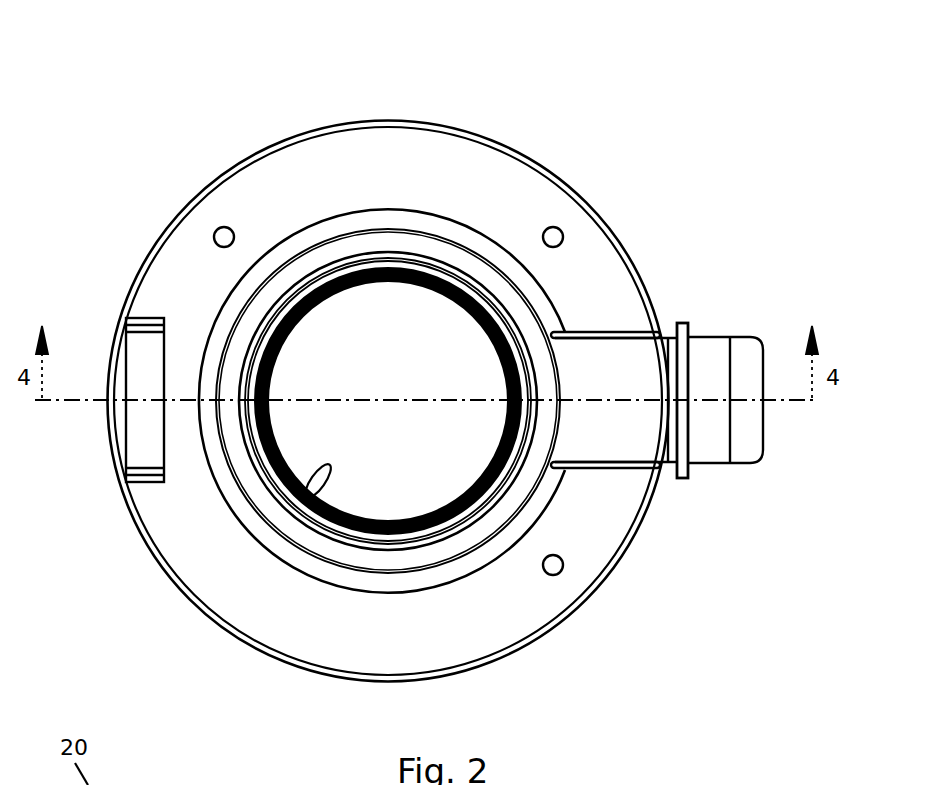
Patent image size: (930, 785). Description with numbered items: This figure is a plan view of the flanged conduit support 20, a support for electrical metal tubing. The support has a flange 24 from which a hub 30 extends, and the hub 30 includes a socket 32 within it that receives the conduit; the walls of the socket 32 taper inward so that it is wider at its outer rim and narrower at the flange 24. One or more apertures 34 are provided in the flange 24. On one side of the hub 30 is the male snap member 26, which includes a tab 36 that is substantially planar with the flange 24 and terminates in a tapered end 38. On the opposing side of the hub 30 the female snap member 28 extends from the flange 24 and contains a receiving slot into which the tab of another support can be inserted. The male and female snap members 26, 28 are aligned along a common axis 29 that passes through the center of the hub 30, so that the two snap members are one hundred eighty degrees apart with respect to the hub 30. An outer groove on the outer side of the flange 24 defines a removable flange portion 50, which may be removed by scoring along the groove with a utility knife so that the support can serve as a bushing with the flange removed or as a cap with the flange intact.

The flanged conduit support 20 is at (150, 120).
The flange 24 is at (388, 401).
The male snap member 26 is at (641, 345).
The female snap member 28 is at (145, 457).
The common axis 29 is at (598, 403).
The hub 30 is at (378, 551).
The socket 32 is at (312, 497).
The apertures 34 is at (553, 237).
The tab 36 is at (713, 343).
The tapered end 38 is at (742, 455).
The removable flange portion 50 is at (382, 401).